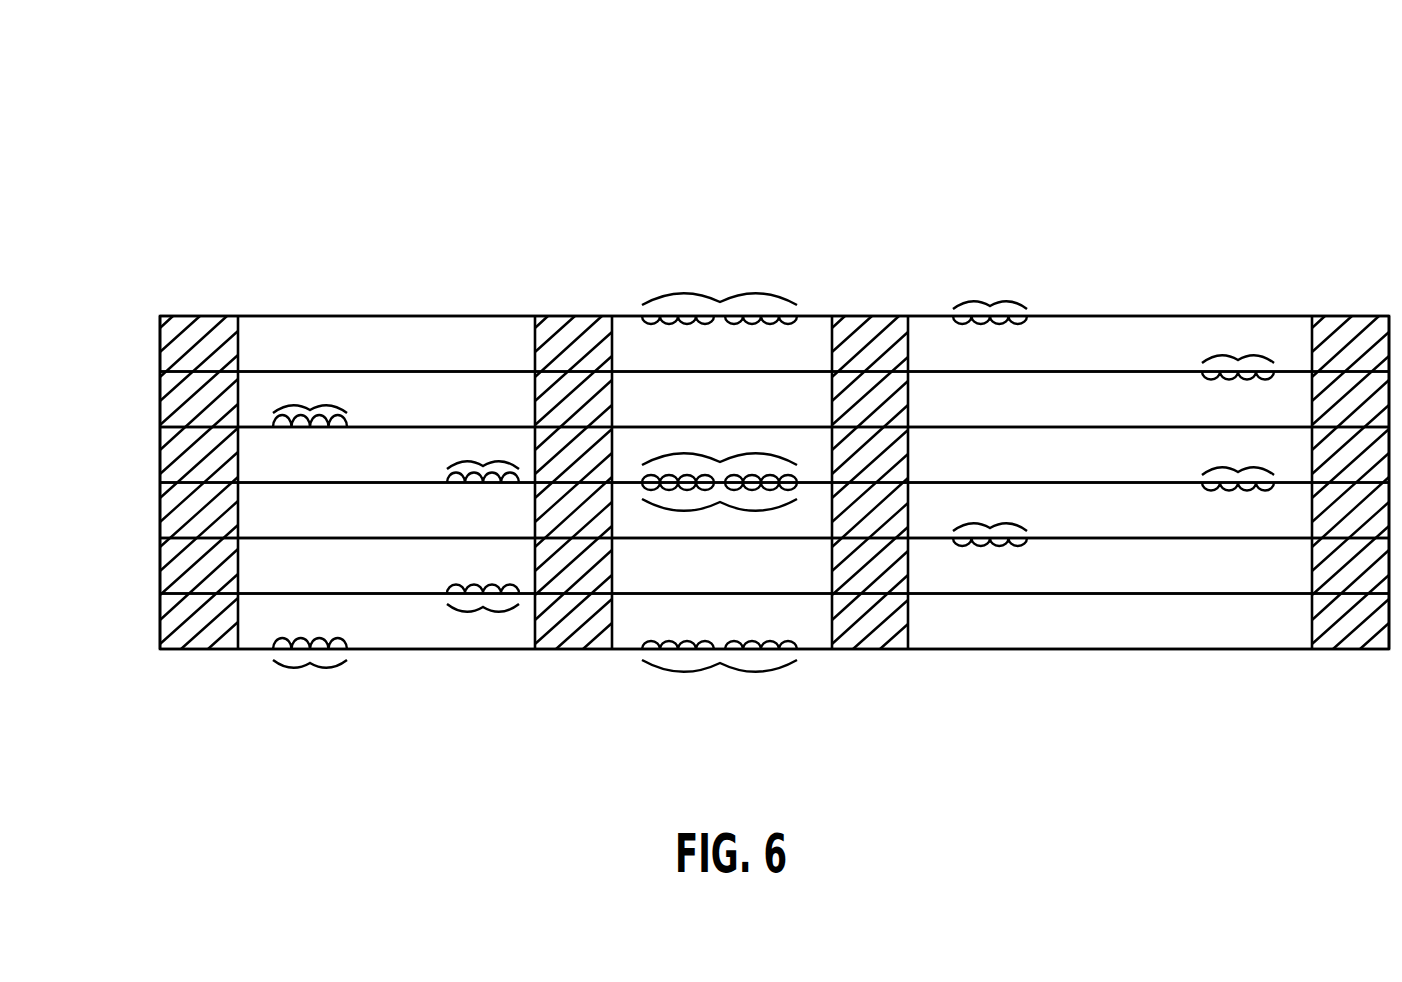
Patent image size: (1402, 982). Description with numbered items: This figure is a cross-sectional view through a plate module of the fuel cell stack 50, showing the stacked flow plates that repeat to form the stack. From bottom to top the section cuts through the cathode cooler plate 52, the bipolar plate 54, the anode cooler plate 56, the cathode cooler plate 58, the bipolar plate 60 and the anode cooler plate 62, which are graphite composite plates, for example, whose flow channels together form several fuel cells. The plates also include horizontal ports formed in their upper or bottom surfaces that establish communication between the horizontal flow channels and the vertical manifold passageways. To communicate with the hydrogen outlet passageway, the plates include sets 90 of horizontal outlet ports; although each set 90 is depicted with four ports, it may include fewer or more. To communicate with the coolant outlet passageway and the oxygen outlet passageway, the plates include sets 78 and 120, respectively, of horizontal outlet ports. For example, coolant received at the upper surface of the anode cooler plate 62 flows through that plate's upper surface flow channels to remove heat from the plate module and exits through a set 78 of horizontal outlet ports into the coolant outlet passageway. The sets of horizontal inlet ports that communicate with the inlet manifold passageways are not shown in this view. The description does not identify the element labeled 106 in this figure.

The fuel cell stack 50 is at (1185, 148).
The cathode cooler plate 52 is at (160, 608).
The bipolar plate 54 is at (160, 565).
The anode cooler plate 56 is at (160, 509).
The cathode cooler plate 58 is at (160, 452).
The bipolar plate 60 is at (160, 397).
The anode cooler plate 62 is at (160, 340).
The set of horizontal outlet ports 78 is at (720, 302).
The set of horizontal outlet ports 90 is at (990, 306).
The winding segment 106 is at (1238, 360).
The set of horizontal outlet ports 120 is at (310, 410).